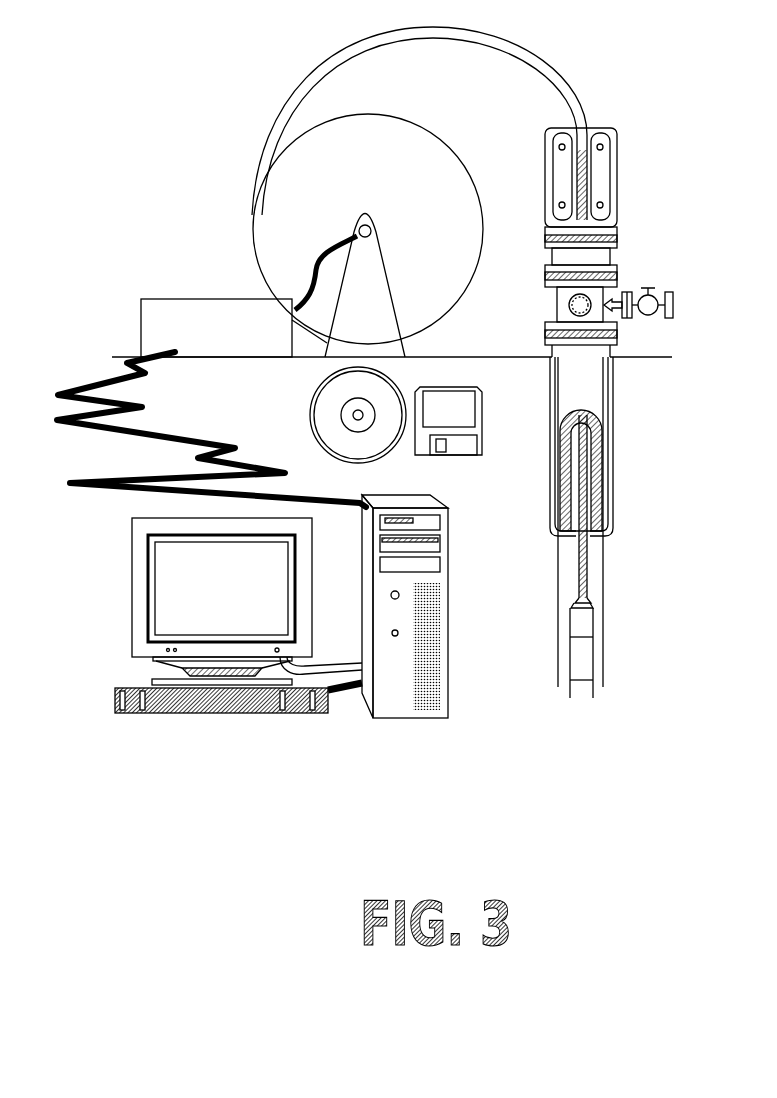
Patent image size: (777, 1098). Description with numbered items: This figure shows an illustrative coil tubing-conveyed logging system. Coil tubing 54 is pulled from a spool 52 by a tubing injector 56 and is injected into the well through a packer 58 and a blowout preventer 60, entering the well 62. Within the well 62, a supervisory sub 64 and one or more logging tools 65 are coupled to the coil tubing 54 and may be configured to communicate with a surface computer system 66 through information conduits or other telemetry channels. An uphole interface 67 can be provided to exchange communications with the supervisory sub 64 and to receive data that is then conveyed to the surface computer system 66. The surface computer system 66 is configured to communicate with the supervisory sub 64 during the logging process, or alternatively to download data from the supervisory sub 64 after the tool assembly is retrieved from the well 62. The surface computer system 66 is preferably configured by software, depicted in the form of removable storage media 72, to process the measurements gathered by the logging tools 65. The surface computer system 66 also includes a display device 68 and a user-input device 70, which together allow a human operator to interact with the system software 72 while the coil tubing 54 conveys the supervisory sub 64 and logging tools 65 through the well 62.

The spool 52 is at (365, 193).
The coil tubing 54 is at (302, 95).
The tubing injector 56 is at (617, 160).
The packer 58 is at (614, 253).
The blowout preventer 60 is at (556, 293).
The well 62 is at (608, 405).
The supervisory sub 64 is at (594, 618).
The logging tools 65 is at (594, 665).
The surface computer system 66 is at (365, 630).
The uphole interface 67 is at (188, 299).
The display device 68 is at (214, 604).
The user-input device 70 is at (236, 715).
The removable storage media 72 is at (415, 457).